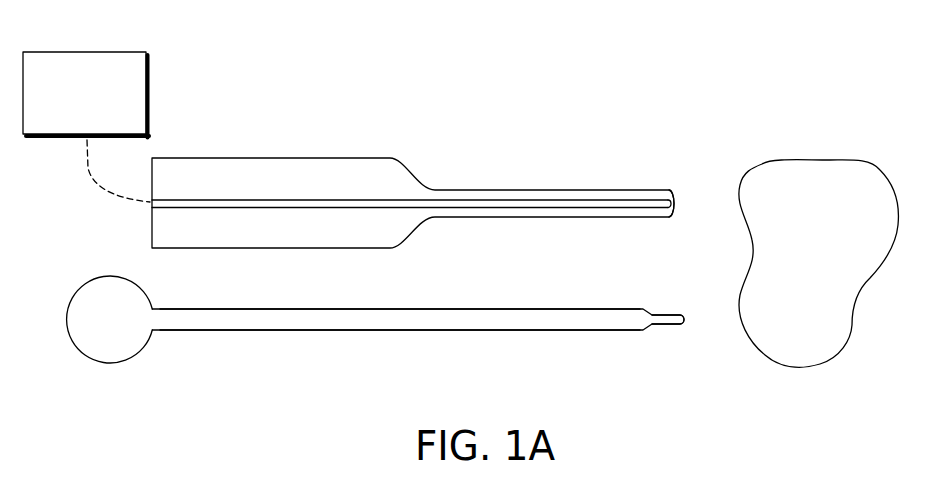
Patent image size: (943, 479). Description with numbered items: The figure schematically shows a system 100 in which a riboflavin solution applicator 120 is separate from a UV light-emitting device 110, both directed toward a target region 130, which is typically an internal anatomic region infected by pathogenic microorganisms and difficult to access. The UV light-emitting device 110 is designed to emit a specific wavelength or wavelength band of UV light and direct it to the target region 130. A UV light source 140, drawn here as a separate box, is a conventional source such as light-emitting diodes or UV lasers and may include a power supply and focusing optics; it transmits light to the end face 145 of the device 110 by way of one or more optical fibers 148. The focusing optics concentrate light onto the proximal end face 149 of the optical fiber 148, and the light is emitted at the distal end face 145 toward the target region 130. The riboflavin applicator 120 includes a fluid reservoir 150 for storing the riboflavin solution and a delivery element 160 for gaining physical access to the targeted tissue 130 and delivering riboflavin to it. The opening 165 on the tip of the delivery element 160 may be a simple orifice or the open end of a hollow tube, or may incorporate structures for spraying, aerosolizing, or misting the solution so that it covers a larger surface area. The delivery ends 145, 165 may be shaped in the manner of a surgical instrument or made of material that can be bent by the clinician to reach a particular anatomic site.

The system 100 is at (610, 48).
The UV light-emitting device 110 is at (410, 162).
The applicator 120 is at (560, 308).
The target region 130 is at (818, 161).
The UV light source 140 is at (151, 109).
The end face 145 is at (675, 199).
The optical fiber 148 is at (266, 200).
The proximal end face 149 is at (152, 204).
The fluid reservoir 150 is at (110, 364).
The delivery element 160 is at (230, 331).
The opening 165 is at (684, 322).